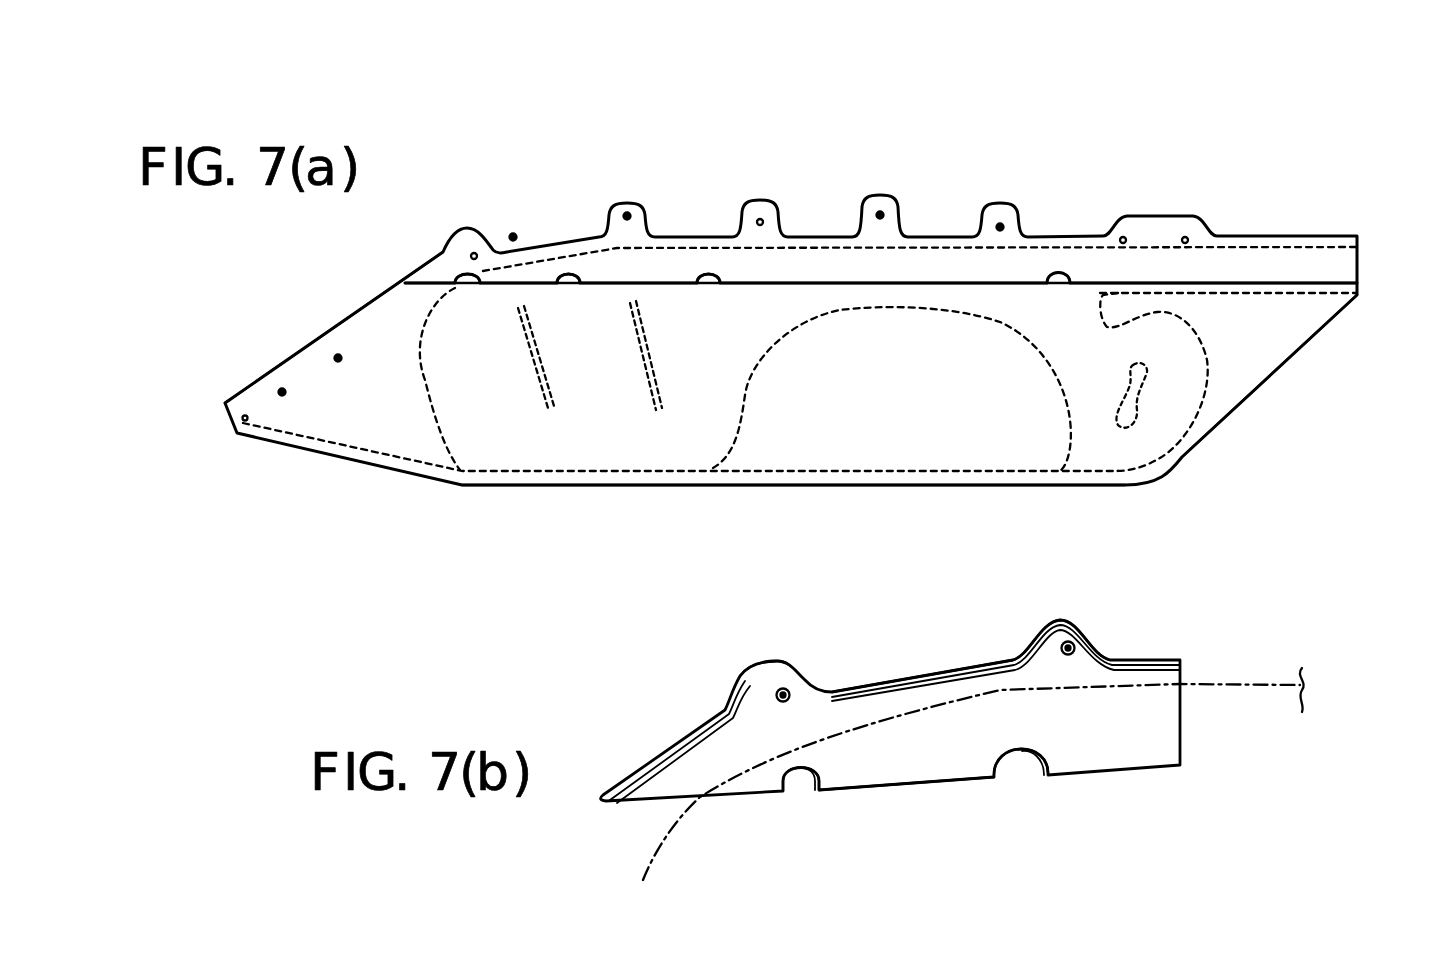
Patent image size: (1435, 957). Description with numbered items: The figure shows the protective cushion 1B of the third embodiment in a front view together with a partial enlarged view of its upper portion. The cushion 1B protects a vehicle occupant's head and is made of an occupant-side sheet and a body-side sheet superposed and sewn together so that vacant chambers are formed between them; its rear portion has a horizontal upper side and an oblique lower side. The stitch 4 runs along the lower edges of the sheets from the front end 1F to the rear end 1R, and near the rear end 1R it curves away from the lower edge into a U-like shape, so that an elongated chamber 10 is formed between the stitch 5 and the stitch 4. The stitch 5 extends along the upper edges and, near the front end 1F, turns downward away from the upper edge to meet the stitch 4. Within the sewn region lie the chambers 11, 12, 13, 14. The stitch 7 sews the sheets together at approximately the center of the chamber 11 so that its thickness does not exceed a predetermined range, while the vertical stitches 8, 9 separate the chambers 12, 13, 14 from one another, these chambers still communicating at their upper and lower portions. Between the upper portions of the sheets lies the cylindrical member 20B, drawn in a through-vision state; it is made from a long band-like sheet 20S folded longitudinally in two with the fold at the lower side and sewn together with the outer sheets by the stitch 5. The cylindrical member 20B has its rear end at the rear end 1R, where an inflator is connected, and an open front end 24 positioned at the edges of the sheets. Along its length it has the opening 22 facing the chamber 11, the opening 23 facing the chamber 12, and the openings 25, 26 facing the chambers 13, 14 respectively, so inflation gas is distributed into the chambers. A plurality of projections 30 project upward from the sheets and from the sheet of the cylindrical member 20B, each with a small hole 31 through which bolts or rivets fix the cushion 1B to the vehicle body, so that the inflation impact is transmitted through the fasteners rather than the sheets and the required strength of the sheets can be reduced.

In FIG. 7A, the protective cushion 1B is at (700, 147).
In FIG. 7A, the front end 1F is at (225, 420).
In FIG. 7A, the rear end 1R is at (1362, 300).
In FIG. 7A, the stitch 4 is at (355, 450).
In FIG. 7A, the stitch 5 is at (845, 250).
In FIG. 7B, the stitch 5 is at (1228, 685).
In FIG. 7A, the stitch 7 is at (1140, 402).
In FIG. 7A, the stitch 8 is at (655, 368).
In FIG. 7A, the stitch 9 is at (548, 370).
In FIG. 7A, the elongated chamber 10 is at (1322, 284).
In FIG. 7A, the chamber 11 is at (1063, 404).
In FIG. 7A, the chamber 12 is at (736, 396).
In FIG. 7A, the chamber 13 is at (616, 445).
In FIG. 7A, the chamber 14 is at (503, 435).
In FIG. 7A, the cylindrical member 20B is at (903, 285).
In FIG. 7B, the cylindrical member 20B is at (903, 665).
In FIG. 7B, the band-like sheet 20S is at (938, 760).
In FIG. 7A, the opening 22 is at (1060, 285).
In FIG. 7A, the opening 23 is at (706, 285).
In FIG. 7B, the front end 24 is at (650, 760).
In FIG. 7A, the opening 25 is at (568, 285).
In FIG. 7B, the opening 25 is at (1020, 767).
In FIG. 7A, the opening 26 is at (467, 285).
In FIG. 7B, the opening 26 is at (800, 775).
In FIG. 7A, the projection 30 is at (470, 230).
In FIG. 7B, the projection 30 is at (757, 663).
In FIG. 7A, the small hole 31 is at (282, 392).
In FIG. 7B, the small hole 31 is at (786, 689).